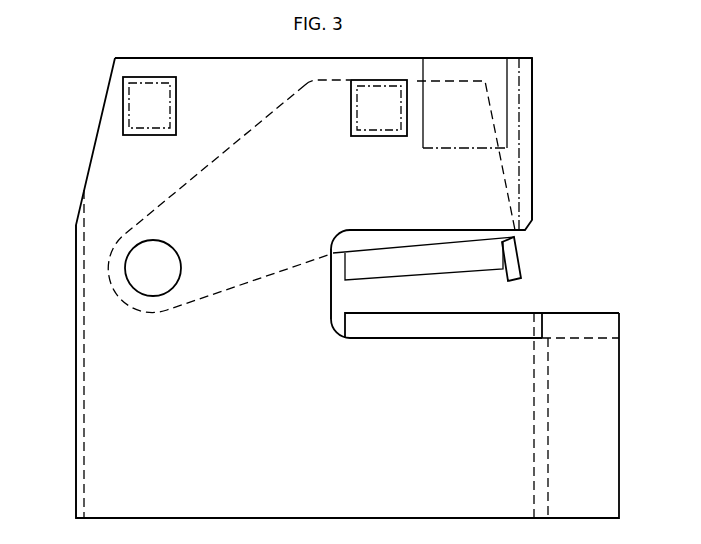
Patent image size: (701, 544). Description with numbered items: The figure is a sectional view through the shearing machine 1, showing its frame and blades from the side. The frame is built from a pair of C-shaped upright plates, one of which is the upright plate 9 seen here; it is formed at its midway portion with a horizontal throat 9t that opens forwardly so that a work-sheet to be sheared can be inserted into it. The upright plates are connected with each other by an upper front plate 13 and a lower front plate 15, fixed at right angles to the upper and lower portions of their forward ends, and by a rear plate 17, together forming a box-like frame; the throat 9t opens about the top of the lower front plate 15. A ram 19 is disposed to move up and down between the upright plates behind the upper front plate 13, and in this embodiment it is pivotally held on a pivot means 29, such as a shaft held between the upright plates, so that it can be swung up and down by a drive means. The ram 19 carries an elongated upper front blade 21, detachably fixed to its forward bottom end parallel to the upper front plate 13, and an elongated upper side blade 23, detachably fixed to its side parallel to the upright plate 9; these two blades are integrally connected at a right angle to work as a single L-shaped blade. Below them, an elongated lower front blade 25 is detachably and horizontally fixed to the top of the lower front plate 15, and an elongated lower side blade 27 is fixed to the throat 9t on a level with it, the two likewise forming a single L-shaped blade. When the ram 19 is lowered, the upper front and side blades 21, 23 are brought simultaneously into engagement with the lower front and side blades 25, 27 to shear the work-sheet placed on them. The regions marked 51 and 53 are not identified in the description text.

The shearing machine 1 is at (347, 264).
The upright plate 9 is at (96, 358).
The throat 9t is at (336, 283).
The upper front plate 13 is at (534, 117).
The lower front plate 15 is at (549, 395).
The rear plate 17 is at (76, 330).
The ram 19 is at (503, 163).
The upper front blade 21 is at (523, 268).
The upper side blade 23 is at (408, 270).
The lower front blade 25 is at (540, 318).
The lower side blade 27 is at (458, 326).
The pivot means 29 is at (135, 269).
The guide opening 51 is at (351, 95).
The guide opening 53 is at (170, 78).